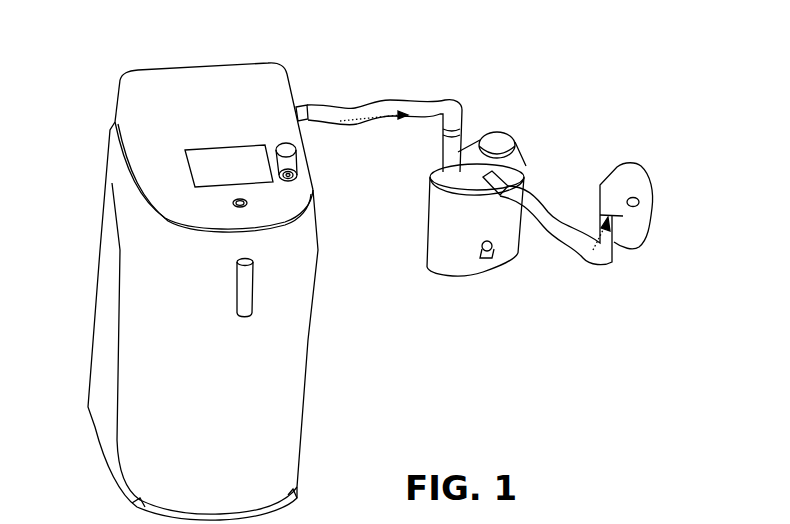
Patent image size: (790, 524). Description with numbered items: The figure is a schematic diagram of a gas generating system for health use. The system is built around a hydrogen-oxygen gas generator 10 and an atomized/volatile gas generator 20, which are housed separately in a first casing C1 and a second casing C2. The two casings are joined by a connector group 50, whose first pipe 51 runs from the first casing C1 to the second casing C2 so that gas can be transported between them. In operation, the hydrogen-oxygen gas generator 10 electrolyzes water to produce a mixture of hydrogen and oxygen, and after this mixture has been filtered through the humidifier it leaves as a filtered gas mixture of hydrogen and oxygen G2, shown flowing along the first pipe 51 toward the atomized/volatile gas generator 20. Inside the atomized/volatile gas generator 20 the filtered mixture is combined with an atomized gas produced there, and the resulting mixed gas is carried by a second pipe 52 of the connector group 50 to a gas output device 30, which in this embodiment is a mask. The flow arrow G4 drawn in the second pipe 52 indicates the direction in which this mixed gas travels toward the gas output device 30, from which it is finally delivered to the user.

The hydrogen-oxygen gas generator 10 is at (227, 283).
The first casing C1 is at (313, 301).
The atomized/volatile gas generator 20 is at (455, 228).
The second casing C2 is at (474, 268).
The gas output device 30 is at (619, 170).
The connector group 50 is at (578, 148).
The first pipe 51 is at (386, 112).
The second pipe 52 is at (547, 216).
The filtered gas mixture of hydrogen and oxygen G2 is at (355, 112).
The gas flow to mouthpiece G4 is at (578, 244).